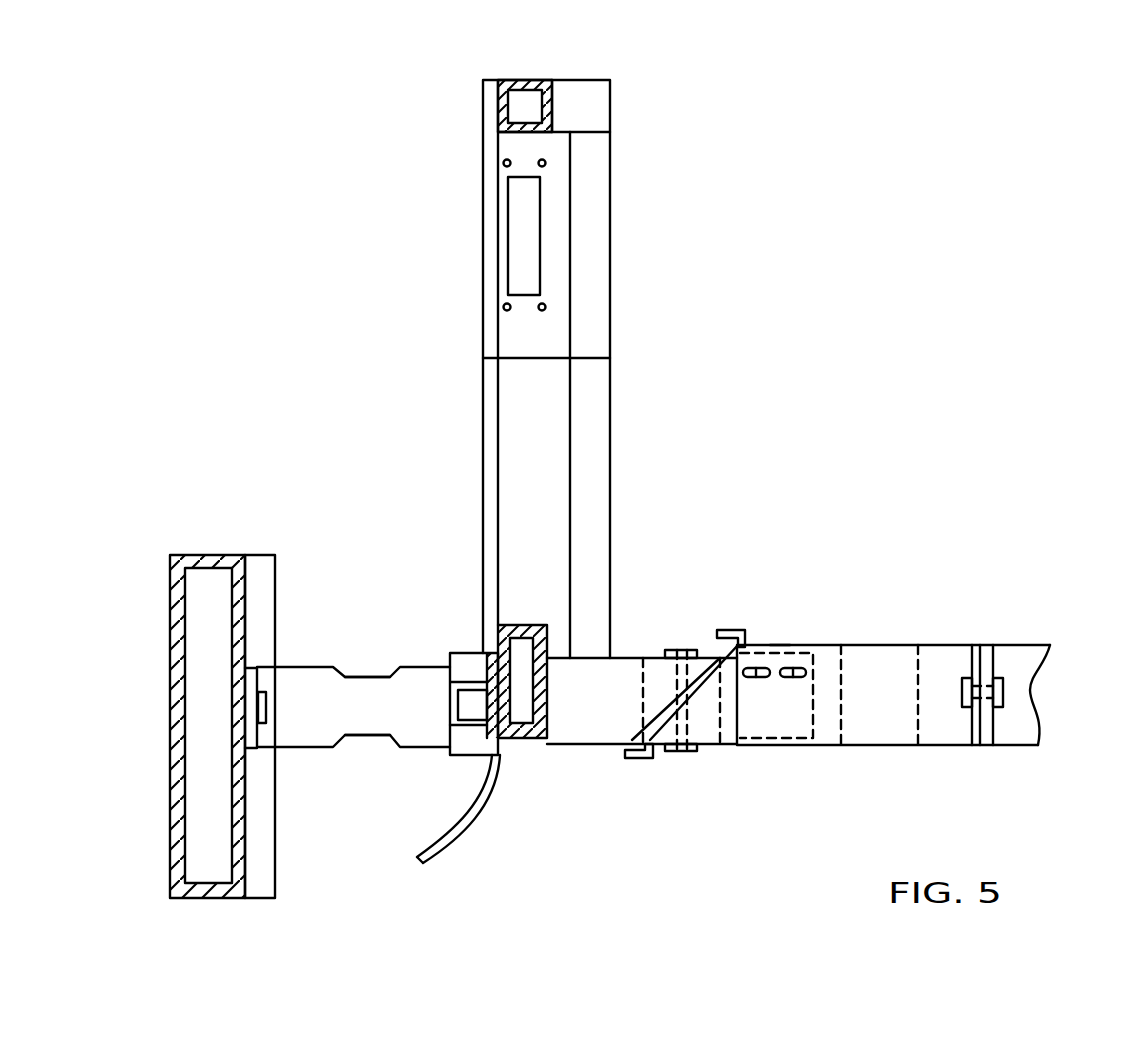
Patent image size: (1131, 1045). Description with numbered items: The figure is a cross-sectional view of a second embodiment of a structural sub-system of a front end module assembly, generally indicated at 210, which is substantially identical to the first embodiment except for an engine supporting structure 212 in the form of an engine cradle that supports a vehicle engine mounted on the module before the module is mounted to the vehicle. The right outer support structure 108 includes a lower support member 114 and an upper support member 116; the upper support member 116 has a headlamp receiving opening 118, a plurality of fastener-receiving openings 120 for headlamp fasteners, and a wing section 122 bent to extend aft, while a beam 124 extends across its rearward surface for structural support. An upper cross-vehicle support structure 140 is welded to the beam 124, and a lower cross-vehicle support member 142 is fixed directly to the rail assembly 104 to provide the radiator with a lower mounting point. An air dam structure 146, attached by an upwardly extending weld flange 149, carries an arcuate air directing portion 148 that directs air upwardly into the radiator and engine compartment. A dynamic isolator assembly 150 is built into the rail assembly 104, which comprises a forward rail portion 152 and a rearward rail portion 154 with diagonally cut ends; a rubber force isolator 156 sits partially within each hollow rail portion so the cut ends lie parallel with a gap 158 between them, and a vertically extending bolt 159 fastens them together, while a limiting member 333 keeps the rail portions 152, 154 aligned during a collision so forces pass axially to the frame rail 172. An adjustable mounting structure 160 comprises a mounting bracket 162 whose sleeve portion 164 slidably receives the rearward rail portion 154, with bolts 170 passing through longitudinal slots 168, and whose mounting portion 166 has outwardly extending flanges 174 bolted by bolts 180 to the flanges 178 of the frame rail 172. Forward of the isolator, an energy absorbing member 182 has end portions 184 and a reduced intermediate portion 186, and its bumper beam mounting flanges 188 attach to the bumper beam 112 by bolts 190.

The rail assembly 104 is at (572, 847).
The right outer support structure 108 is at (640, 348).
The bumper beam 112 is at (172, 600).
The lower support member 114 is at (513, 460).
The upper support member 116 is at (513, 328).
The headlamp receiving opening 118 is at (528, 248).
The fastener-receiving openings 120 is at (546, 162).
The wing section 122 is at (597, 180).
The beam 124 is at (598, 92).
The upper cross-vehicle support structure 140 is at (520, 85).
The lower cross-vehicle support member 142 is at (538, 702).
The air dam structure 146 is at (452, 703).
The air directing portion 148 is at (455, 832).
The weld flange 149 is at (473, 655).
The dynamic isolator assembly 150 is at (698, 768).
The forward rail portion 152 is at (591, 747).
The rearward rail portion 154 is at (756, 728).
The force isolator 156 is at (707, 657).
The gap 158 is at (660, 710).
The bolt 159 is at (677, 755).
The adjustable mounting structure 160 is at (800, 630).
The mounting bracket 162 is at (937, 747).
The sleeve portion 164 is at (778, 644).
The mounting portion 166 is at (978, 645).
The slots 168 is at (757, 678).
The bolts 170 is at (758, 668).
The rail of vehicle frame assembly 172 is at (1028, 650).
The outwardly extending flanges 174 is at (457, 755).
The outwardly extending flanges 178 is at (990, 733).
The bolts 180 is at (1005, 692).
The energy absorbing member 182 is at (327, 765).
The end portions 184 is at (300, 678).
The intermediate portion 186 is at (362, 688).
The bumper beam mounting flanges 188 is at (252, 678).
The bolts 190 is at (268, 707).
The apparatus 210 is at (828, 329).
The engine supporting structure 212 is at (876, 728).
The limiting member 333 is at (725, 630).